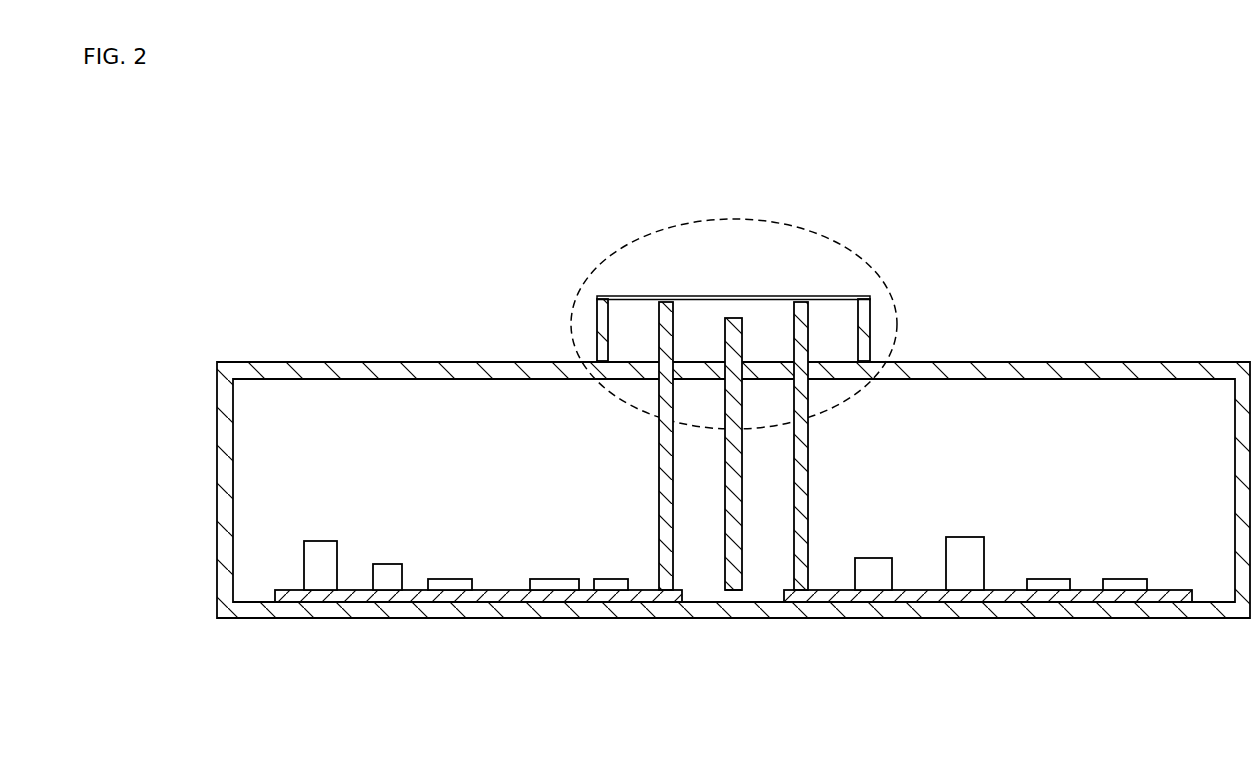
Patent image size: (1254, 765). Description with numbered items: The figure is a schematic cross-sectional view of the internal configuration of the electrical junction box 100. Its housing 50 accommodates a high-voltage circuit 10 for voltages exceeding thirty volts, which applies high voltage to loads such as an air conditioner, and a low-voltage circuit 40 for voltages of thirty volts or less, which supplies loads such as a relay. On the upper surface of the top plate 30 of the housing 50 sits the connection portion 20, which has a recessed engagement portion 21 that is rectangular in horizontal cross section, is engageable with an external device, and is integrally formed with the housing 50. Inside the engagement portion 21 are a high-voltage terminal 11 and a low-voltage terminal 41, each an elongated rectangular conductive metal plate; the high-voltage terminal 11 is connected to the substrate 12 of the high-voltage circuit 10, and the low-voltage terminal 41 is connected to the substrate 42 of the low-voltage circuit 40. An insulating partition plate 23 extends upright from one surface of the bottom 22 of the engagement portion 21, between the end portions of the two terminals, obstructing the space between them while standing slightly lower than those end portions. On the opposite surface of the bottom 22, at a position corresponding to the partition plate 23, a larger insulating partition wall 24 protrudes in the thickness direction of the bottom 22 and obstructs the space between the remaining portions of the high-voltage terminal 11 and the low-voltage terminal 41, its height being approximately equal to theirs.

The electrical junction box 100 is at (1217, 167).
The housing 50 is at (1057, 308).
The top plate 30 is at (1122, 368).
The connection portion 20 is at (833, 272).
The engagement portion 21 is at (862, 311).
The bottom 22 is at (630, 360).
The high-voltage terminal 11 is at (666, 302).
The partition plate 23 is at (732, 318).
The partition wall 24 is at (732, 592).
The low-voltage terminal 41 is at (800, 302).
The high-voltage circuit 10 is at (455, 545).
The substrate 12 is at (370, 596).
The low-voltage circuit 40 is at (1012, 543).
The substrate 42 is at (1018, 596).